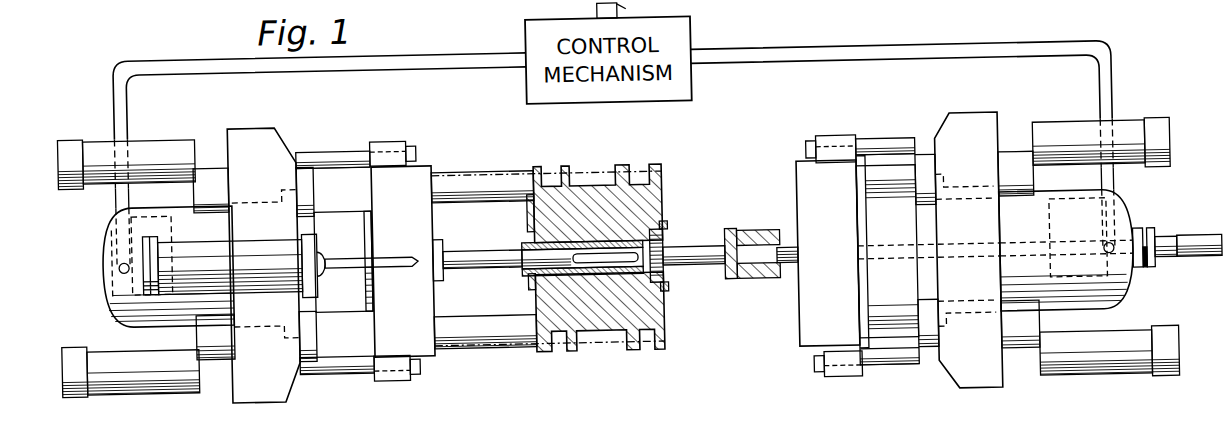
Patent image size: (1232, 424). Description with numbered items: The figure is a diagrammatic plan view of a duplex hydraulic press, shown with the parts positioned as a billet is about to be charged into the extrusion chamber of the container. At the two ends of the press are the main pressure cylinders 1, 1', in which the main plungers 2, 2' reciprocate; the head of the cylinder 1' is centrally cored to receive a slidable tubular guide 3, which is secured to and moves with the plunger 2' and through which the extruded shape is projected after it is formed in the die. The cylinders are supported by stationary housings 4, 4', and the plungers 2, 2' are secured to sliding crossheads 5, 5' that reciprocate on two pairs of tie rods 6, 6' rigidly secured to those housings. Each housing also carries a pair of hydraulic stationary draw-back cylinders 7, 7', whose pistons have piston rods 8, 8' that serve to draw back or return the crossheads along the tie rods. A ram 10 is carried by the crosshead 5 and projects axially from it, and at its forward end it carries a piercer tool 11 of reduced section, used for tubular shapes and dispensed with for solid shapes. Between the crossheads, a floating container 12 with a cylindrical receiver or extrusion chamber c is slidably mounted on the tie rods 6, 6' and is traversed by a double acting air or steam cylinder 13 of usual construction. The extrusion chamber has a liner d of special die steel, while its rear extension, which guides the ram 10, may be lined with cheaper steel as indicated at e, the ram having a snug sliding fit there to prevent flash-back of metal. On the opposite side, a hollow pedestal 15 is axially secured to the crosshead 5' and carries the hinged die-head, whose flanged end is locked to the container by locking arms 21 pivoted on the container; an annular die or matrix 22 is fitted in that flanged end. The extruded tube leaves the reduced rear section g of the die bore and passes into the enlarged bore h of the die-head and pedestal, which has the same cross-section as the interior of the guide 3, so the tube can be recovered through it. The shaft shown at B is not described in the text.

The main pressure cylinder 1 is at (151, 267).
The main pressure cylinder 1' is at (1080, 246).
The main plunger 2 is at (342, 218).
The main plunger 2' is at (928, 227).
The tubular guide 3 is at (1178, 250).
The stationary housing 4 is at (264, 251).
The stationary housing 4' is at (967, 234).
The sliding crosshead 5 is at (416, 261).
The sliding crosshead 5' is at (810, 256).
The tie rod 6 is at (545, 168).
The tie rod 6' is at (549, 349).
The draw-back cylinder 7 is at (129, 267).
The draw-back cylinder 7' is at (1106, 245).
The piston rod 8 is at (358, 263).
The piston rod 8' is at (896, 249).
The ram 10 is at (470, 255).
The piercer tool 11 is at (607, 253).
The floating container 12 is at (560, 210).
The double acting air or steam cylinder 13 is at (185, 272).
The hollow pedestal 15 is at (784, 267).
The locking arm 21 is at (666, 229).
The annular die 22 is at (733, 232).
The shaft B is at (691, 251).
The extrusion chamber c is at (622, 263).
The liner d is at (600, 270).
The liner e is at (543, 278).
The rear section of die bore g is at (733, 272).
The enlarged bore h is at (760, 262).